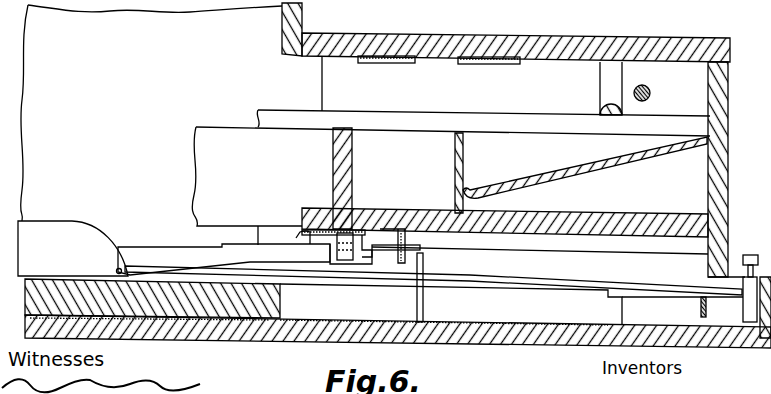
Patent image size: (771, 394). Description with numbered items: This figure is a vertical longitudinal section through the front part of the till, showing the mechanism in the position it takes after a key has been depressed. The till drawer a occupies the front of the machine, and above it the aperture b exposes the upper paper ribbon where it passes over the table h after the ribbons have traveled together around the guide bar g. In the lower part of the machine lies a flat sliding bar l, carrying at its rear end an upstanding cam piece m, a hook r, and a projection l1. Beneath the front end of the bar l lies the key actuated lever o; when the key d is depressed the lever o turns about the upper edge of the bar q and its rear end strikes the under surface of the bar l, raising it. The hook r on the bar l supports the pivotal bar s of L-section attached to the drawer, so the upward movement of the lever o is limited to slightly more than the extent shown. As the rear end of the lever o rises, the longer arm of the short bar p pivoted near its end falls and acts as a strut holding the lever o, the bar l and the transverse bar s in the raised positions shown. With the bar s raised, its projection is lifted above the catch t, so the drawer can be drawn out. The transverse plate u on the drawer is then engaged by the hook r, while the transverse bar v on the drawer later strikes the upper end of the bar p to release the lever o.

The till drawer a is at (727, 192).
The aperture b is at (478, 36).
The table h is at (413, 52).
The guide bar g is at (651, 92).
The cam piece m is at (60, 225).
The sliding bar l is at (176, 254).
The projection l1 is at (296, 228).
The pivotal bar s is at (367, 230).
The catch t is at (400, 228).
The transverse plate u is at (345, 262).
The transverse bar v is at (415, 248).
The hook r is at (378, 265).
The short bar p is at (436, 297).
The key actuated lever o is at (639, 287).
The bar q is at (700, 303).
The key d is at (747, 262).